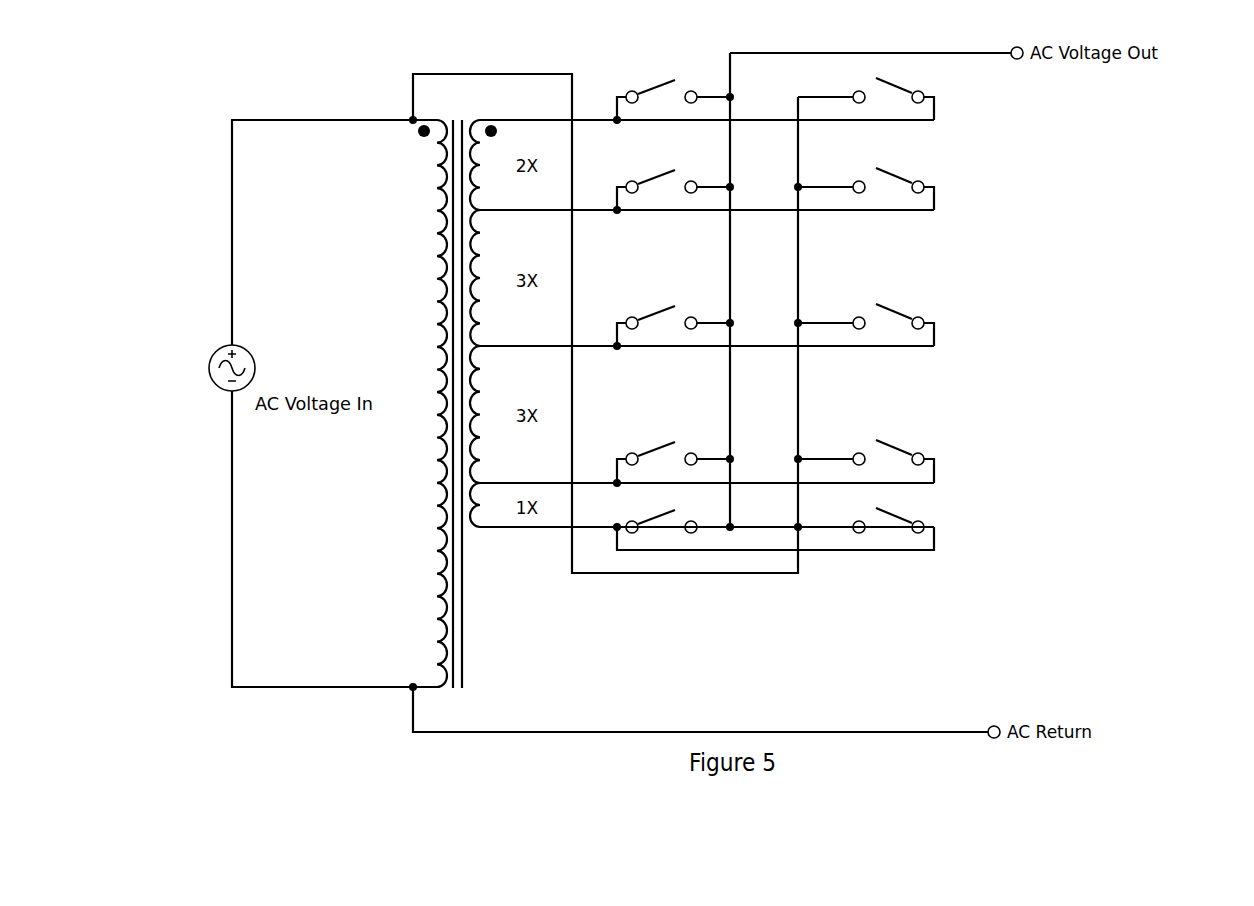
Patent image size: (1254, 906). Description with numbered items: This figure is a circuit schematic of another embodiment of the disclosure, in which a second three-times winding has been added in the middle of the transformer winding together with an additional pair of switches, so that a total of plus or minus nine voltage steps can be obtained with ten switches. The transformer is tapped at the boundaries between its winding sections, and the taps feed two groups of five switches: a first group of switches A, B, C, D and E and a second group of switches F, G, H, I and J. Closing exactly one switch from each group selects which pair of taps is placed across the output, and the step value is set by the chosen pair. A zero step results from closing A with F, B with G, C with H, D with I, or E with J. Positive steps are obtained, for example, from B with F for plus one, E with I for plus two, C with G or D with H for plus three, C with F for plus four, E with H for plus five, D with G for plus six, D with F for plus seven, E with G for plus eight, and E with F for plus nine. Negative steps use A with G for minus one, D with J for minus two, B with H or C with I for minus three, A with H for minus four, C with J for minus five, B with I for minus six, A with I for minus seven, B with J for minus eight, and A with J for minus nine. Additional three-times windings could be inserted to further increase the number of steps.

The switch A is at (775, 520).
The switch B is at (673, 452).
The switch C is at (673, 316).
The switch D is at (673, 180).
The switch E is at (673, 89).
The switch F is at (866, 511).
The switch G is at (866, 452).
The switch H is at (866, 316).
The switch I is at (866, 179).
The switch J is at (866, 89).